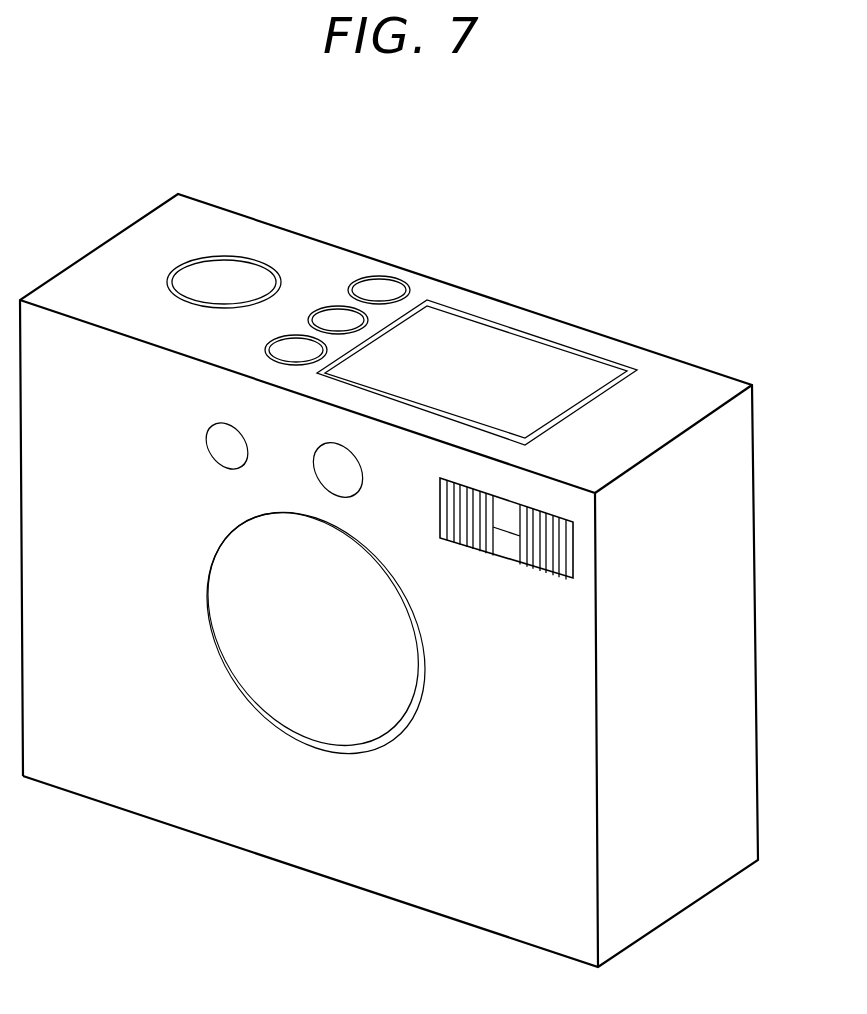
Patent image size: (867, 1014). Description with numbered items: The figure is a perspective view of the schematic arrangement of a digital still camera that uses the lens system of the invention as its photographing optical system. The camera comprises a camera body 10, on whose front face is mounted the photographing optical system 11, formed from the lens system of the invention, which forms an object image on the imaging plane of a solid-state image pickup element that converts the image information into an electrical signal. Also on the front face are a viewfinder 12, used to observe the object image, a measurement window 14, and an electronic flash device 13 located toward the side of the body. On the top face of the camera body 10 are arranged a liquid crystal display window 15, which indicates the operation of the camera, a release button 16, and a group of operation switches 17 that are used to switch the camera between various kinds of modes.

The camera body 10 is at (711, 758).
The photographing optical system 11 is at (242, 630).
The viewfinder 12 is at (330, 472).
The electronic flash device 13 is at (578, 558).
The measurement window 14 is at (219, 443).
The liquid crystal display window 15 is at (533, 360).
The release button 16 is at (205, 272).
The operation switches 17 is at (297, 345).